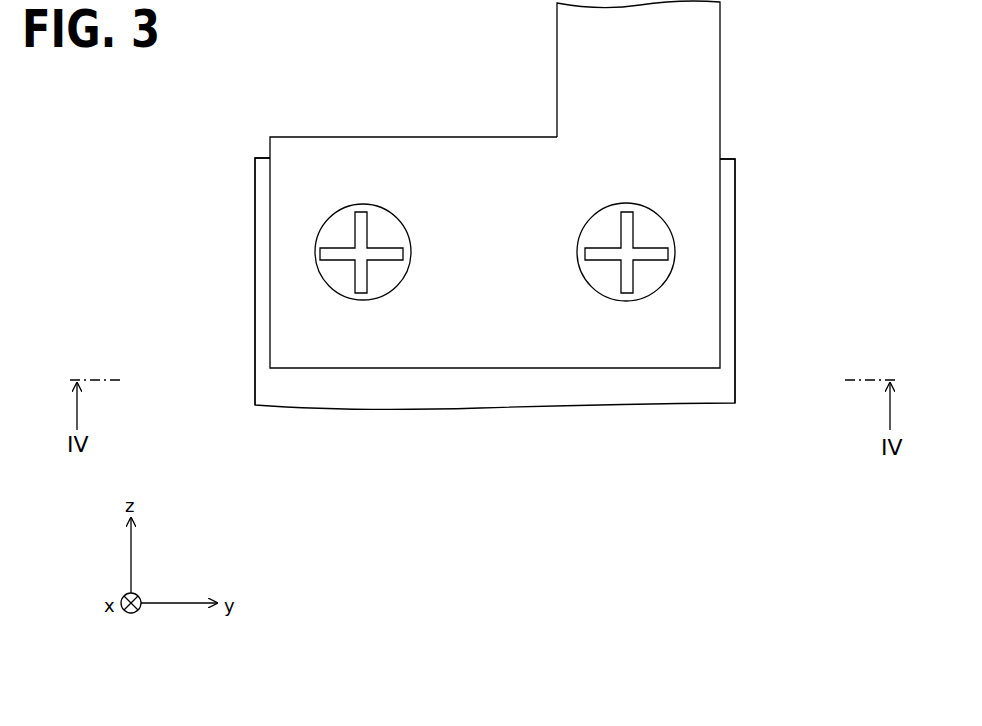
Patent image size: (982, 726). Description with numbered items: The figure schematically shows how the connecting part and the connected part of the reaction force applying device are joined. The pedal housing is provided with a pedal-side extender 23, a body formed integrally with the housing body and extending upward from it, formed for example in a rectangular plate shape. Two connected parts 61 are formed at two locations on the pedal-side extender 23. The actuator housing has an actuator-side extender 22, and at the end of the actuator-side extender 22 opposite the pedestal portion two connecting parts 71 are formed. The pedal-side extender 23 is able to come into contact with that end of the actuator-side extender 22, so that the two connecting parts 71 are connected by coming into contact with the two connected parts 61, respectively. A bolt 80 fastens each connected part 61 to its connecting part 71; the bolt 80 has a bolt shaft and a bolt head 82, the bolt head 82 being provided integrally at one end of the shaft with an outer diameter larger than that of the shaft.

The actuator-side extender 22 is at (693, 72).
The pedal-side extender 23 is at (692, 386).
The connected part 61 is at (261, 226).
The connecting part 71 is at (307, 282).
The bolt 80 is at (320, 252).
The bolt head 82 is at (373, 272).